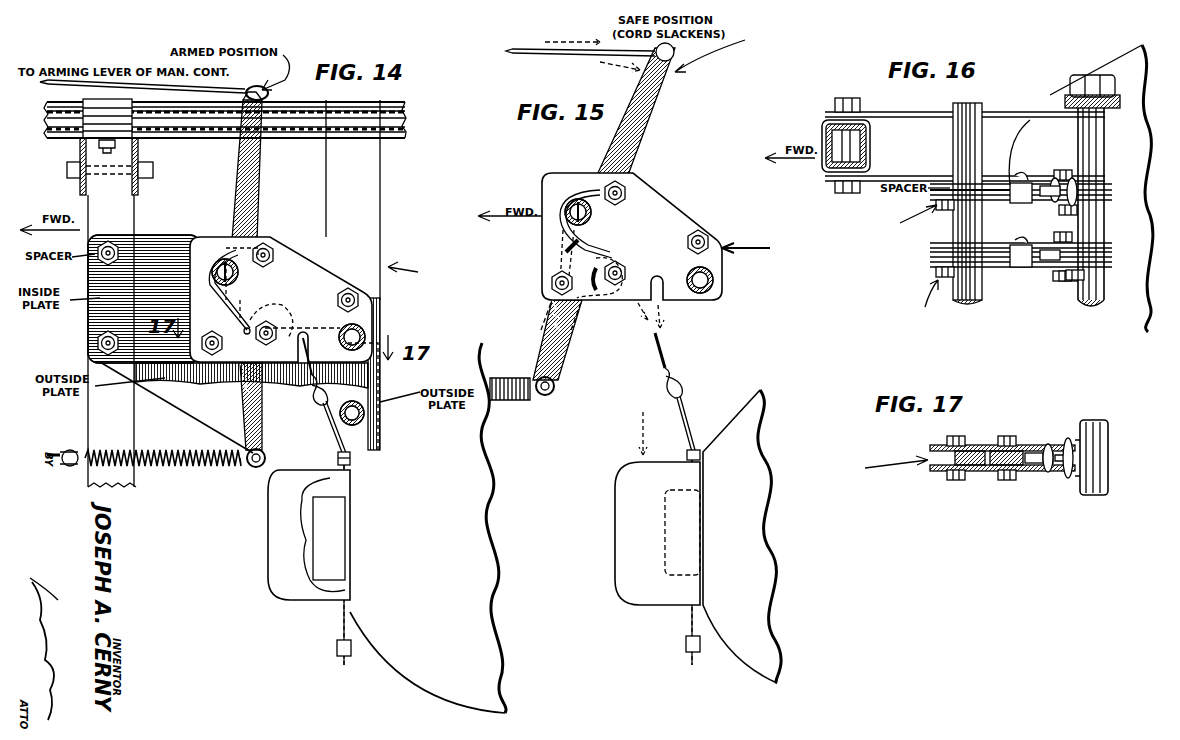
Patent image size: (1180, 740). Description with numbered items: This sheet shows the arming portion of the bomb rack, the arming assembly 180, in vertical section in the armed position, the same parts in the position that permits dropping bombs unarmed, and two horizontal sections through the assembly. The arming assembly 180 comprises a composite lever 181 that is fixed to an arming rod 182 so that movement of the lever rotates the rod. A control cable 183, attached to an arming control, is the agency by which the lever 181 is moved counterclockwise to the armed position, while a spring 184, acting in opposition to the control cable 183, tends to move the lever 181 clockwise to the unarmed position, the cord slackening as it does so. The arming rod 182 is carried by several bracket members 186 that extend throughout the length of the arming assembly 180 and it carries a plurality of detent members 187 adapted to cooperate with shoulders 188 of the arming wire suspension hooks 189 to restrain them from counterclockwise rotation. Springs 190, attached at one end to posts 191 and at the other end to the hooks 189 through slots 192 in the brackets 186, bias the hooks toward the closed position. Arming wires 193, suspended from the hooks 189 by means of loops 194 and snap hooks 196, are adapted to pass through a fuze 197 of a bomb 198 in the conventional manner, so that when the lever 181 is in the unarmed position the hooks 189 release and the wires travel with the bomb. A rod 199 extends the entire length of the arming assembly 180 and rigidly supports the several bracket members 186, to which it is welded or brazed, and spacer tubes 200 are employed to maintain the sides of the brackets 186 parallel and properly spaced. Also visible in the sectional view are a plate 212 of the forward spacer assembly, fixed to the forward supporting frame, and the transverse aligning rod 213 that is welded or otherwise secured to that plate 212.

In FIG. 14, the arming assembly 180 is at (418, 270).
In FIG. 15, the arming assembly 180 is at (760, 248).
In FIG. 16, the arming assembly 180 is at (904, 260).
In FIG. 14, the composite lever 181 is at (246, 168).
In FIG. 15, the composite lever 181 is at (640, 108).
In FIG. 14, the arming rod 182 is at (238, 277).
In FIG. 15, the arming rod 182 is at (567, 222).
In FIG. 16, the arming rod 182 is at (960, 150).
In FIG. 14, the control cable 183 is at (70, 88).
In FIG. 15, the control cable 183 is at (580, 56).
In FIG. 14, the spring 184 is at (150, 472).
In FIG. 15, the spring 184 is at (510, 400).
In FIG. 14, the bracket members 186 is at (322, 281).
In FIG. 15, the bracket members 186 is at (665, 210).
In FIG. 16, the bracket members 186 is at (943, 199).
In FIG. 17, the bracket members 186 is at (992, 427).
In FIG. 14, the detent members 187 is at (215, 300).
In FIG. 15, the detent members 187 is at (555, 247).
In FIG. 16, the detent members 187 is at (955, 252).
In FIG. 14, the shoulders 188 is at (224, 333).
In FIG. 15, the shoulders 188 is at (590, 245).
In FIG. 14, the arming wire suspension hooks 189 is at (285, 368).
In FIG. 15, the arming wire suspension hooks 189 is at (627, 263).
In FIG. 16, the arming wire suspension hooks 189 is at (1045, 215).
In FIG. 17, the arming wire suspension hooks 189 is at (965, 472).
In FIG. 14, the springs 190 is at (266, 321).
In FIG. 15, the springs 190 is at (608, 250).
In FIG. 16, the springs 190 is at (1045, 235).
In FIG. 17, the springs 190 is at (988, 468).
In FIG. 14, the posts 191 is at (273, 250).
In FIG. 15, the posts 191 is at (625, 187).
In FIG. 16, the posts 191 is at (1075, 280).
In FIG. 14, the slots 192 is at (330, 328).
In FIG. 17, the slots 192 is at (1002, 472).
In FIG. 14, the arming wires 193 is at (330, 420).
In FIG. 15, the arming wires 193 is at (684, 432).
In FIG. 16, the arming wires 193 is at (1087, 158).
In FIG. 17, the arming wires 193 is at (1085, 420).
In FIG. 14, the loops 194 is at (312, 366).
In FIG. 15, the loops 194 is at (668, 350).
In FIG. 16, the loops 194 is at (1052, 175).
In FIG. 17, the loops 194 is at (1046, 443).
In FIG. 14, the snap hooks 196 is at (328, 398).
In FIG. 15, the snap hooks 196 is at (683, 382).
In FIG. 16, the snap hooks 196 is at (1072, 200).
In FIG. 17, the snap hooks 196 is at (1070, 478).
In FIG. 14, the fuze 197 is at (330, 530).
In FIG. 15, the fuze 197 is at (690, 532).
In FIG. 14, the bomb 198 is at (440, 687).
In FIG. 15, the bomb 198 is at (747, 606).
In FIG. 14, the rod 199 is at (366, 333).
In FIG. 15, the rod 199 is at (714, 283).
In FIG. 16, the rod 199 is at (1108, 290).
In FIG. 17, the rod 199 is at (1090, 475).
In FIG. 16, the spacer tubes 200 is at (1095, 190).
In FIG. 14, the plates 212 is at (336, 453).
In FIG. 14, the transverse aligning rod 213 is at (366, 428).